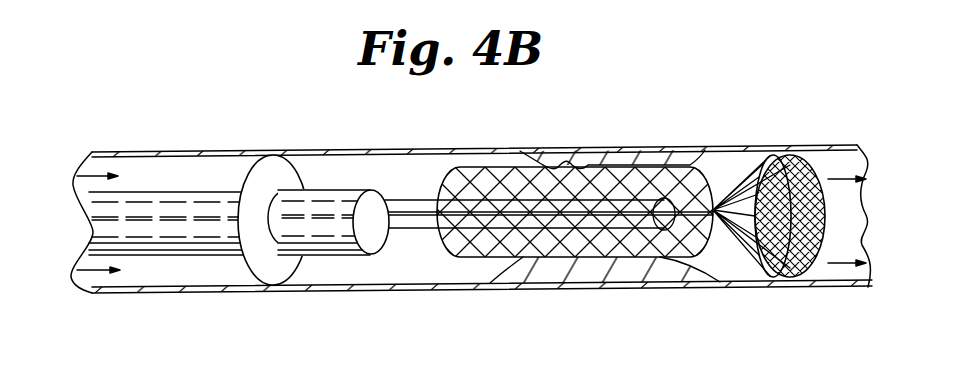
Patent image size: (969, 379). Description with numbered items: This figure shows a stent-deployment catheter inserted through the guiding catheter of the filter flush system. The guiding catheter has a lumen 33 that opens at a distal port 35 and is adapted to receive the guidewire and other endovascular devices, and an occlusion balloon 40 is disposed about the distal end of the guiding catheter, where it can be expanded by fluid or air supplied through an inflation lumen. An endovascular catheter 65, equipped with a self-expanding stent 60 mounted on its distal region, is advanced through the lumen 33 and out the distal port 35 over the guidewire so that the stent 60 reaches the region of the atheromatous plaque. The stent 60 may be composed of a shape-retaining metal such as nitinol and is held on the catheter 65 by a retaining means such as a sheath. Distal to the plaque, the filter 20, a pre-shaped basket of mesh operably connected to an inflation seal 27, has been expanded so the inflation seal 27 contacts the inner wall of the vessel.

The filter 20 is at (823, 260).
The inflation seal 27 is at (782, 153).
The lumen 33 is at (207, 247).
The distal port 35 is at (378, 243).
The occlusion balloon 40 is at (278, 170).
The self-expanding stent 60 is at (505, 166).
The endovascular catheter 65 is at (345, 243).